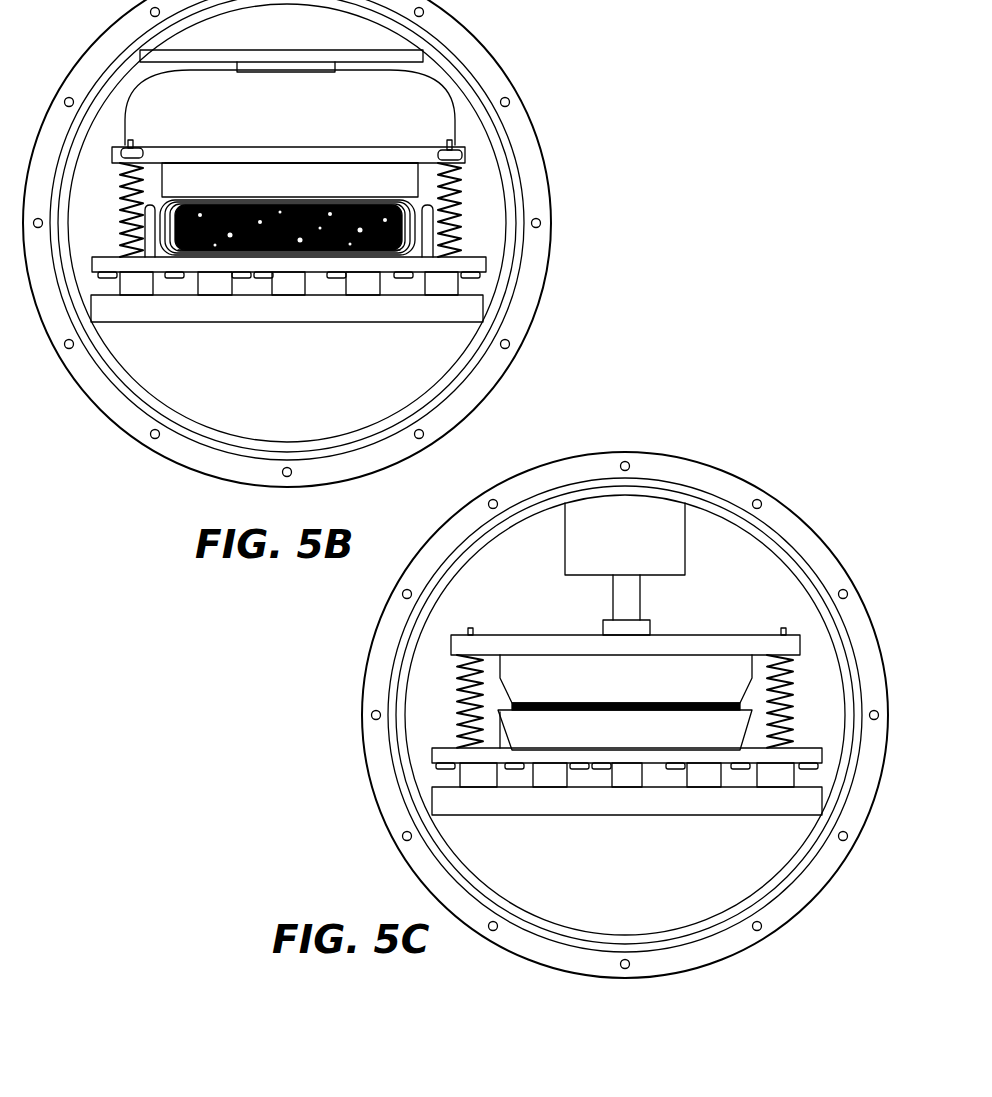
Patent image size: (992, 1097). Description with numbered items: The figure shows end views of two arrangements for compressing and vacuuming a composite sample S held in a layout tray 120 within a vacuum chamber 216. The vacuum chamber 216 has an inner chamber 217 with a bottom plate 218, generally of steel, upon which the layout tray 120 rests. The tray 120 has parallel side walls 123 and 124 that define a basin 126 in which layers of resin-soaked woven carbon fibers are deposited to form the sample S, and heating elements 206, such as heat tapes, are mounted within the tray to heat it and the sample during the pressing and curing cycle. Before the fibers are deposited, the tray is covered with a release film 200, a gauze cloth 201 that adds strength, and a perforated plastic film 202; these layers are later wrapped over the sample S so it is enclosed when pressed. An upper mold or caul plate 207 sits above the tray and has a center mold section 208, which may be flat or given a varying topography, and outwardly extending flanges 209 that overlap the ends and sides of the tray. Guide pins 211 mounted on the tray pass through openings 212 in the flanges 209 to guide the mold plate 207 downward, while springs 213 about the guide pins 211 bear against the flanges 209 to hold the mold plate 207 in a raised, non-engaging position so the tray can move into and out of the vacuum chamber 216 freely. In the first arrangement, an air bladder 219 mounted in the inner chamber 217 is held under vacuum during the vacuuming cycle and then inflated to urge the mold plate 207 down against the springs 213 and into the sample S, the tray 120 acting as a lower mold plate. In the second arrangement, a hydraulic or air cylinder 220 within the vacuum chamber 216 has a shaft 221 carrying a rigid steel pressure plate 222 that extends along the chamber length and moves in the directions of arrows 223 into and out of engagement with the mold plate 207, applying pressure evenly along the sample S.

In FIG. 5B, the sample S is at (284, 255).
In FIG. 5C, the sample S is at (512, 708).
In FIG. 5B, the layout tray 120 is at (365, 265).
In FIG. 5C, the layout tray 120 is at (656, 725).
In FIG. 5B, the side wall 123 is at (152, 256).
In FIG. 5C, the side wall 123 is at (500, 733).
In FIG. 5B, the side wall 124 is at (425, 260).
In FIG. 5C, the side wall 124 is at (748, 732).
In FIG. 5C, the basin 126 is at (585, 732).
In FIG. 5B, the release film 200 is at (172, 203).
In FIG. 5B, the gauze cloth 201 is at (408, 230).
In FIG. 5B, the perforated plastic film 202 is at (412, 257).
In FIG. 5B, the heating elements 206 is at (240, 278).
In FIG. 5C, the heating elements 206 is at (612, 769).
In FIG. 5B, the mold plate 207 is at (385, 163).
In FIG. 5B, the center mold section 208 is at (301, 195).
In FIG. 5B, the flanges 209 is at (112, 155).
In FIG. 5B, the guide pins 211 is at (452, 142).
In FIG. 5C, the guide pins 211 is at (790, 636).
In FIG. 5B, the openings 212 is at (120, 152).
In FIG. 5B, the springs 213 is at (458, 192).
In FIG. 5C, the springs 213 is at (795, 692).
In FIG. 5B, the vacuum chamber 216 is at (545, 331).
In FIG. 5C, the vacuum chamber 216 is at (772, 492).
In FIG. 5B, the inner chamber 217 is at (432, 83).
In FIG. 5C, the inner chamber 217 is at (512, 560).
In FIG. 5B, the bottom plate 218 is at (322, 322).
In FIG. 5C, the bottom plate 218 is at (538, 797).
In FIG. 5B, the air bladder 219 is at (296, 121).
In FIG. 5C, the hydraulic or air cylinder 220 is at (600, 597).
In FIG. 5C, the shaft 221 is at (632, 597).
In FIG. 5C, the pressure plate 222 is at (770, 640).
In FIG. 5C, the arrows 223 is at (713, 608).